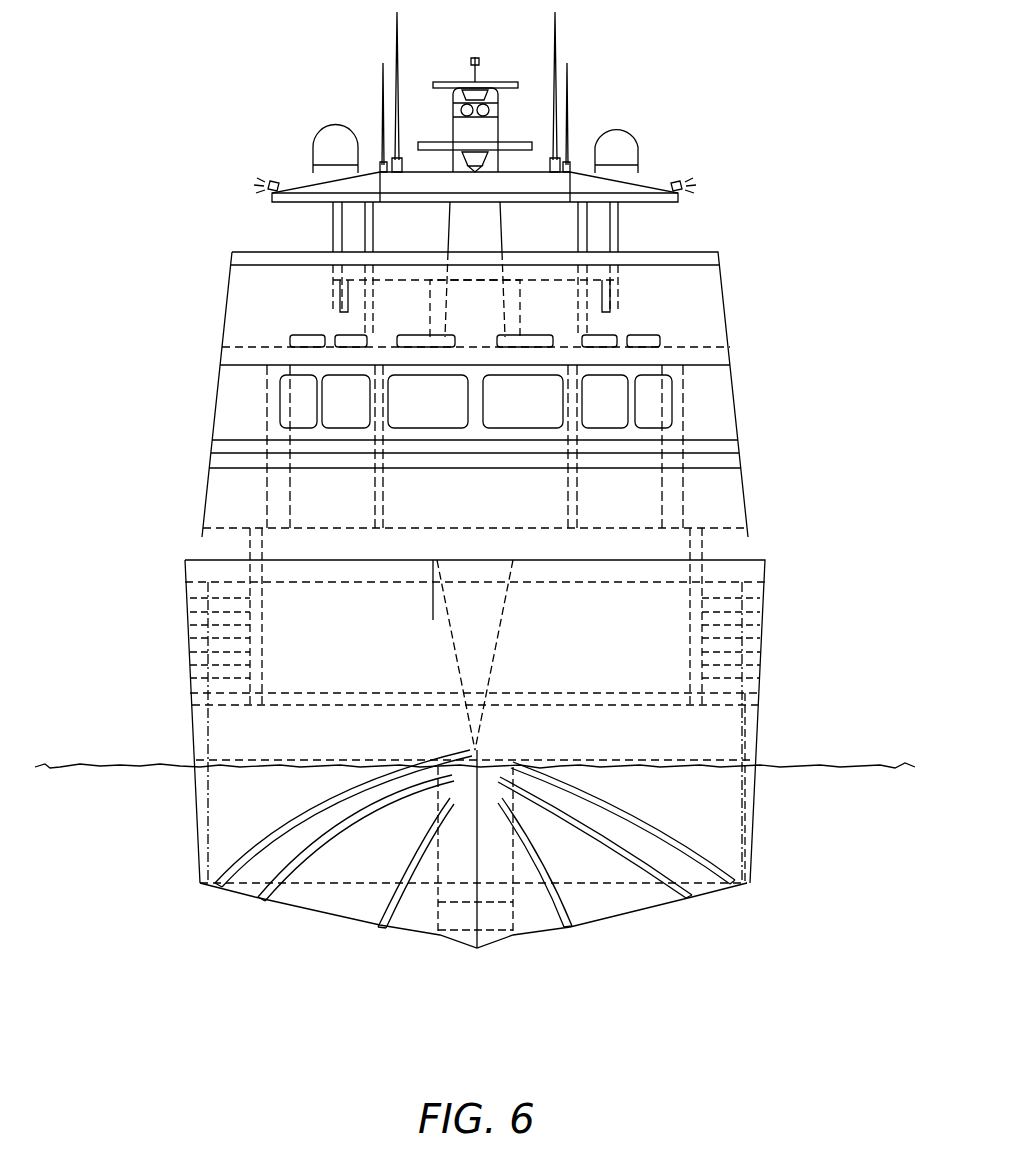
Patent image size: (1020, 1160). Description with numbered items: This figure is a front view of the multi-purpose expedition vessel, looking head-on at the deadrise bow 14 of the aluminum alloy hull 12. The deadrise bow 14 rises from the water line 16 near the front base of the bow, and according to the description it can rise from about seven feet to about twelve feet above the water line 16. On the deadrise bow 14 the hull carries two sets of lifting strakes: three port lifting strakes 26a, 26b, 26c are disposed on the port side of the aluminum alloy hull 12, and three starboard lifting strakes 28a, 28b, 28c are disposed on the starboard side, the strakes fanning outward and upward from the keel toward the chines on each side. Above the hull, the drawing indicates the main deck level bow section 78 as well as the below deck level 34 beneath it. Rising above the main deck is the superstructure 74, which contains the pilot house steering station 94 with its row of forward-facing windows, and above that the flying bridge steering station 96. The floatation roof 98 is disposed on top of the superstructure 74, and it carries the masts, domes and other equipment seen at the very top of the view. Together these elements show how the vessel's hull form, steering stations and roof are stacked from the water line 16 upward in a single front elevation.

The superstructure 74 is at (777, 353).
The floatation roof 98 is at (648, 184).
The flying bridge steering station 96 is at (473, 322).
The pilot house steering station 94 is at (235, 413).
The main deck level bow section 78 is at (765, 560).
The below deck level 34 is at (758, 705).
The aluminum alloy hull 12 is at (193, 747).
The water line 16 is at (860, 763).
The deadrise bow 14 is at (375, 982).
The starboard lifting strake 28a is at (267, 835).
The starboard lifting strake 28b is at (258, 883).
The starboard lifting strake 28c is at (383, 902).
The port lifting strake 26a is at (687, 835).
The port lifting strake 26b is at (703, 888).
The port lifting strake 26c is at (570, 903).